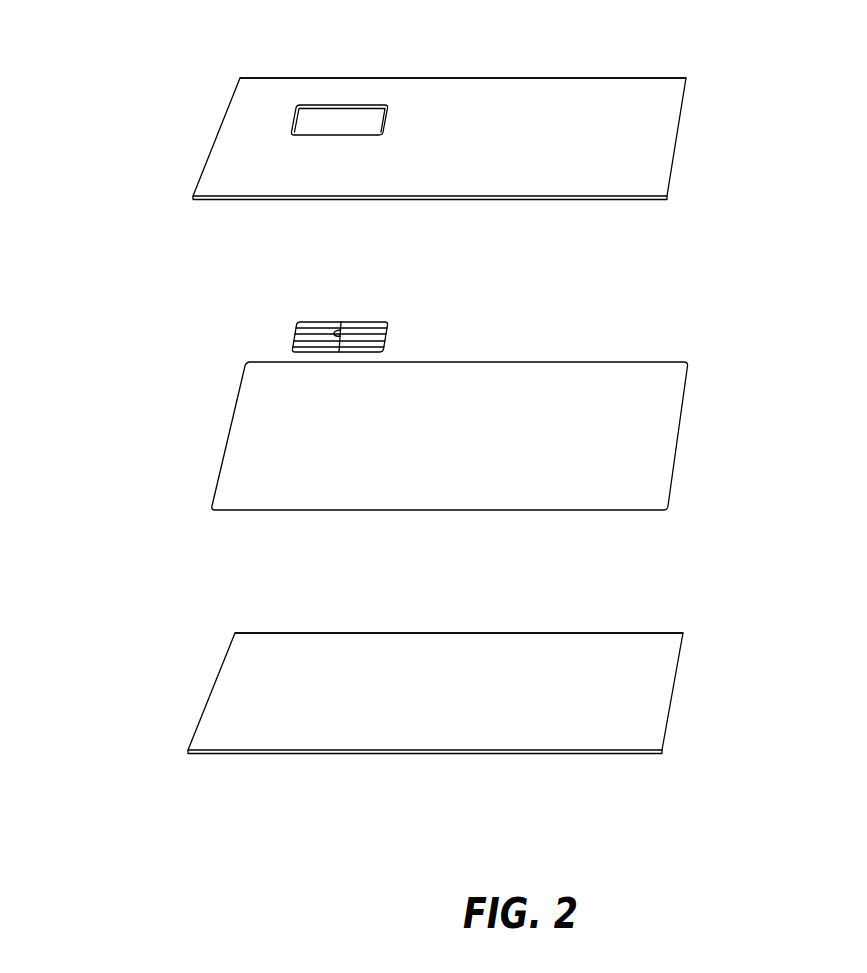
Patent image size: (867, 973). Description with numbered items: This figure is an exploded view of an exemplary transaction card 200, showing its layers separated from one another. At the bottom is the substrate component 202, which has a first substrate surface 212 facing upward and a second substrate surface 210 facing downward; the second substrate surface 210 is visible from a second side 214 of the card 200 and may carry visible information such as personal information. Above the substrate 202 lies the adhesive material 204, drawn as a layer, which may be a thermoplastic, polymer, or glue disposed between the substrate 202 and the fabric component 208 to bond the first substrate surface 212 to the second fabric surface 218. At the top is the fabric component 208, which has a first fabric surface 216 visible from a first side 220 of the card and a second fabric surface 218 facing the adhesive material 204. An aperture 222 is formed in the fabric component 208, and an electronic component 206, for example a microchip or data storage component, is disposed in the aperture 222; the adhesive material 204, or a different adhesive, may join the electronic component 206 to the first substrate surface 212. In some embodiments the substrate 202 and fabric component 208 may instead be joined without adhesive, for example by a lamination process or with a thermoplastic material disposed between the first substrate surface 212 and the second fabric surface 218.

The transaction card 200 is at (60, 127).
The substrate component 202 is at (678, 663).
The adhesive material 204 is at (683, 417).
The electronic component 206 is at (387, 332).
The fabric component 208 is at (679, 129).
The second substrate surface 210 is at (254, 730).
The first substrate surface 212 is at (297, 657).
The second side 214 is at (589, 793).
The first fabric surface 216 is at (245, 103).
The second fabric surface 218 is at (250, 173).
The first side 220 is at (557, 47).
The aperture 222 is at (343, 103).